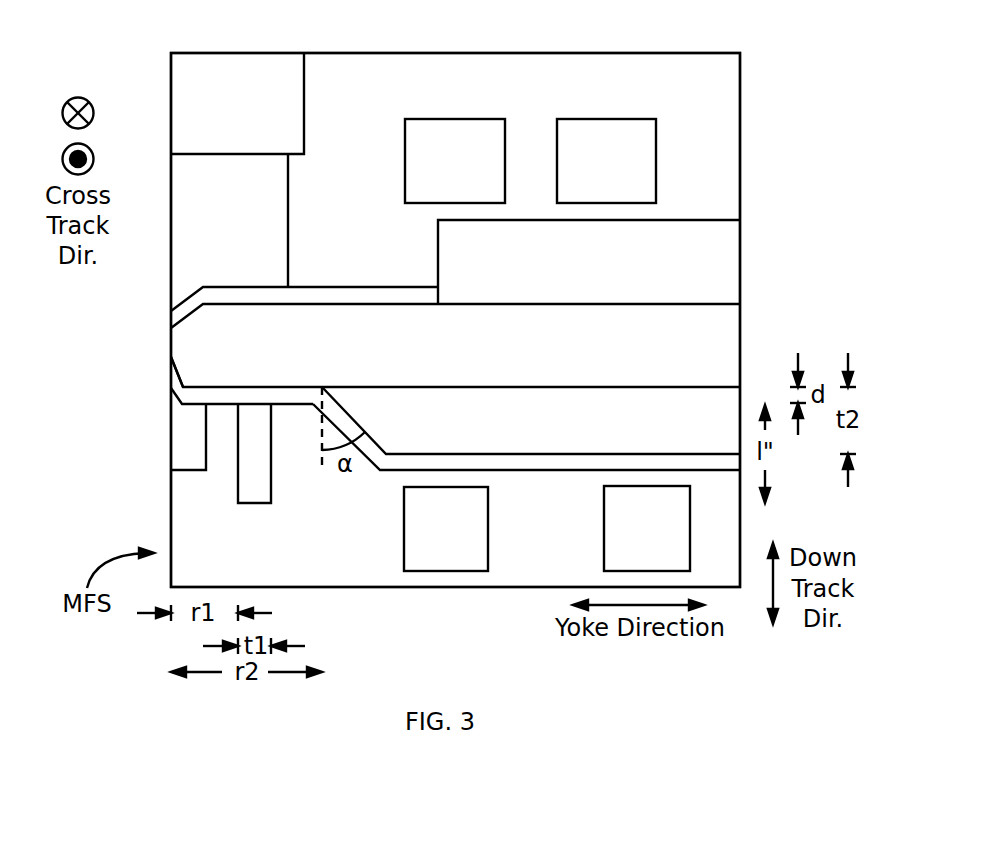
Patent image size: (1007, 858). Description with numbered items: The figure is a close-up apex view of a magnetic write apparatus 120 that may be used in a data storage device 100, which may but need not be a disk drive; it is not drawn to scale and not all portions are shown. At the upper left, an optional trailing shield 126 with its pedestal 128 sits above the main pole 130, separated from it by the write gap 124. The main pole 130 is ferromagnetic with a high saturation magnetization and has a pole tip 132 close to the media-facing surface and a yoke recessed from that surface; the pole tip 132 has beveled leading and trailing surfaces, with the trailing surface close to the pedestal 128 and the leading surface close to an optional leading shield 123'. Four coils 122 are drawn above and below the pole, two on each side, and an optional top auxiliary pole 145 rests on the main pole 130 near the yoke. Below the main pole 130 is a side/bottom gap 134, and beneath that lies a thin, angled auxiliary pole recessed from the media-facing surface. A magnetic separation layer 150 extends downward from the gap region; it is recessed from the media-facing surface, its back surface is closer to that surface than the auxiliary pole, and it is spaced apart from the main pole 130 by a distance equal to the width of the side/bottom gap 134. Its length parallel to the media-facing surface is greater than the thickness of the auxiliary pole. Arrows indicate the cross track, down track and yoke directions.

The data storage device 100 is at (400, 31).
The write apparatus 120 is at (455, 320).
The trailing shield 126 is at (237, 103).
The pedestal 128 is at (240, 220).
The coils 122 is at (547, 345).
The top auxiliary pole 145 is at (589, 262).
The write gap 124 is at (171, 320).
The main pole 130 is at (455, 345).
The pole tip 132 is at (165, 379).
The side/bottom gap 134 is at (171, 403).
The leading shield 123' is at (156, 462).
The magnetic separation layer 150 is at (262, 505).